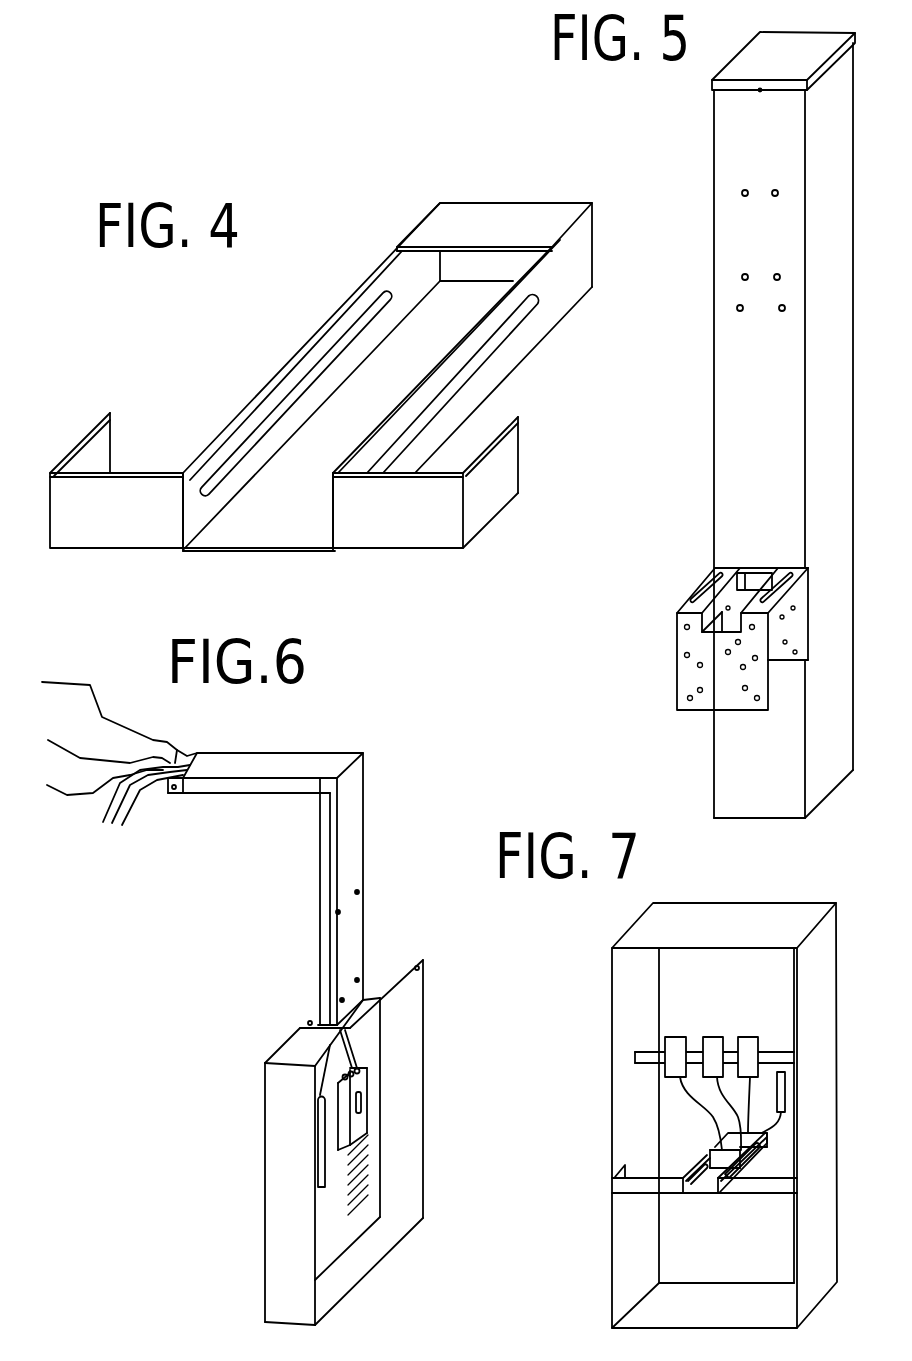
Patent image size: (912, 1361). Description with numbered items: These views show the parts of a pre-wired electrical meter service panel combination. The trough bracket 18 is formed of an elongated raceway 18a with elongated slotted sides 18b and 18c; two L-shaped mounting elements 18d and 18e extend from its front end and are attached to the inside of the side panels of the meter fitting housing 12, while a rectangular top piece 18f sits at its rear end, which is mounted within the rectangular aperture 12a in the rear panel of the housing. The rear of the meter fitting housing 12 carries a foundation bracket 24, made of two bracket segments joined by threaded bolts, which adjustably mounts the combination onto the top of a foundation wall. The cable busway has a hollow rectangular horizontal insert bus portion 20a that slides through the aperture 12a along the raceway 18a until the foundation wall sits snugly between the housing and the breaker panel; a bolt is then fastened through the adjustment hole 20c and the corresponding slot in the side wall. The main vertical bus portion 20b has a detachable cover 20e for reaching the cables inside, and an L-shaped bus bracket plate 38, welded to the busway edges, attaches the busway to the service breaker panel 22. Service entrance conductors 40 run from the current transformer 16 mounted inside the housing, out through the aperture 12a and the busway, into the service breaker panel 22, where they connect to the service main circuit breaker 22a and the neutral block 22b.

In FIG. 5, the meter fitting housing 12 is at (833, 378).
In FIG. 7, the meter fitting housing 12 is at (818, 1002).
In FIG. 5, the aperture 12a is at (760, 572).
In FIG. 7, the current transformer 16 is at (665, 1066).
In FIG. 4, the trough bracket 18 is at (337, 377).
In FIG. 7, the trough bracket 18 is at (743, 1167).
In FIG. 4, the elongated raceway 18a is at (418, 380).
In FIG. 4, the elongated slotted side 18b is at (428, 290).
In FIG. 4, the elongated slotted side 18c is at (585, 292).
In FIG. 4, the L-shaped mounting element 18d is at (412, 528).
In FIG. 4, the L-shaped mounting element 18e is at (120, 528).
In FIG. 4, the rectangular top piece 18f is at (515, 232).
In FIG. 6, the insert bus portion 20a is at (307, 770).
In FIG. 7, the insert bus portion 20a is at (722, 1150).
In FIG. 6, the main vertical bus portion 20b is at (325, 867).
In FIG. 6, the adjustment hole 20c is at (180, 795).
In FIG. 6, the detachable cover 20e is at (348, 838).
In FIG. 6, the service breaker panel 22 is at (298, 1156).
In FIG. 6, the service main circuit breaker 22a is at (363, 1122).
In FIG. 6, the neutral block 22b is at (331, 1196).
In FIG. 5, the foundation bracket 24 is at (782, 599).
In FIG. 6, the bus bracket plate 38 is at (318, 1012).
In FIG. 6, the service entrance conductors 40 is at (137, 809).